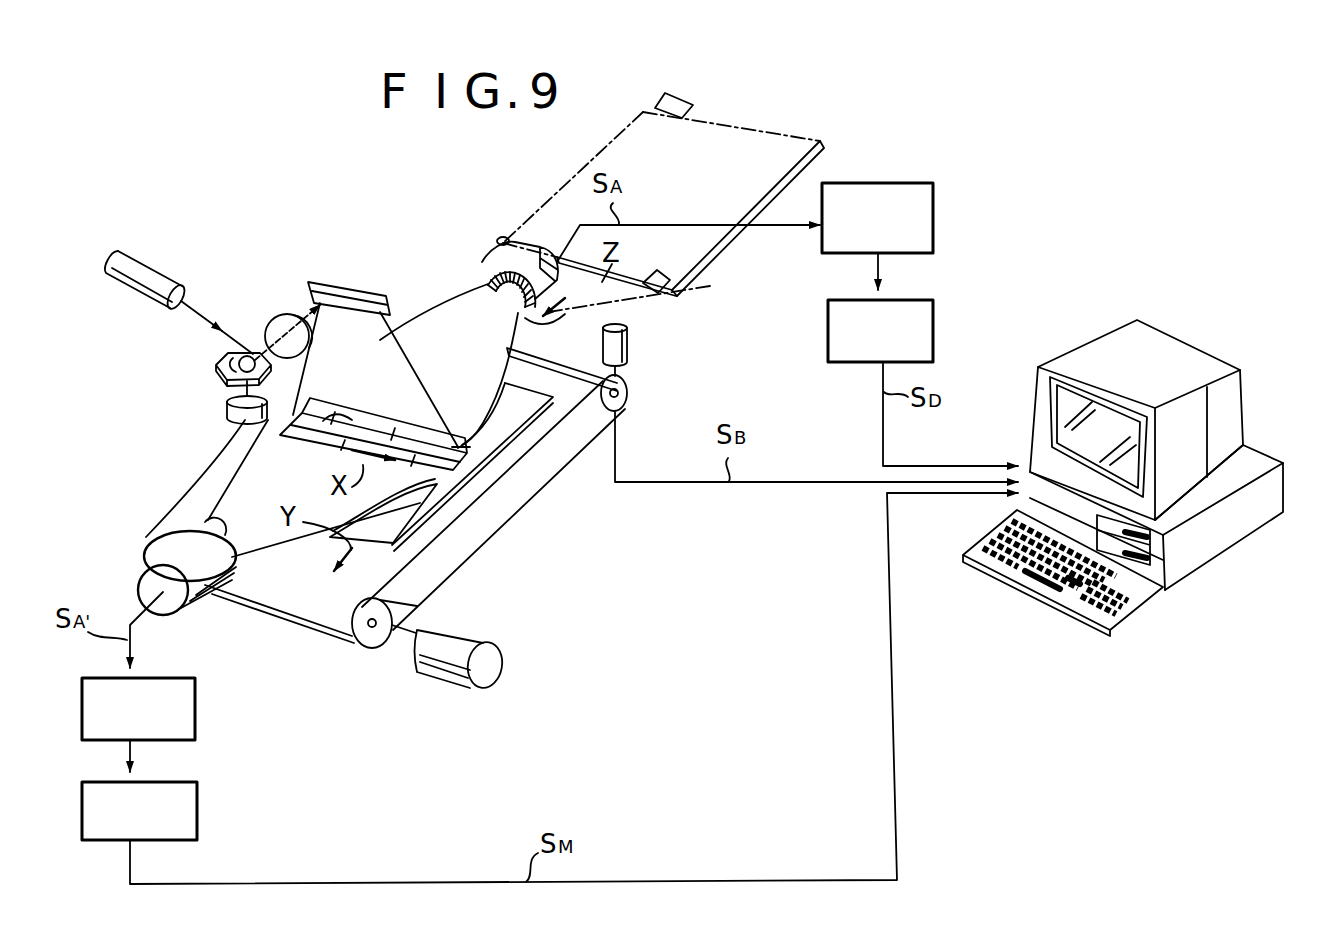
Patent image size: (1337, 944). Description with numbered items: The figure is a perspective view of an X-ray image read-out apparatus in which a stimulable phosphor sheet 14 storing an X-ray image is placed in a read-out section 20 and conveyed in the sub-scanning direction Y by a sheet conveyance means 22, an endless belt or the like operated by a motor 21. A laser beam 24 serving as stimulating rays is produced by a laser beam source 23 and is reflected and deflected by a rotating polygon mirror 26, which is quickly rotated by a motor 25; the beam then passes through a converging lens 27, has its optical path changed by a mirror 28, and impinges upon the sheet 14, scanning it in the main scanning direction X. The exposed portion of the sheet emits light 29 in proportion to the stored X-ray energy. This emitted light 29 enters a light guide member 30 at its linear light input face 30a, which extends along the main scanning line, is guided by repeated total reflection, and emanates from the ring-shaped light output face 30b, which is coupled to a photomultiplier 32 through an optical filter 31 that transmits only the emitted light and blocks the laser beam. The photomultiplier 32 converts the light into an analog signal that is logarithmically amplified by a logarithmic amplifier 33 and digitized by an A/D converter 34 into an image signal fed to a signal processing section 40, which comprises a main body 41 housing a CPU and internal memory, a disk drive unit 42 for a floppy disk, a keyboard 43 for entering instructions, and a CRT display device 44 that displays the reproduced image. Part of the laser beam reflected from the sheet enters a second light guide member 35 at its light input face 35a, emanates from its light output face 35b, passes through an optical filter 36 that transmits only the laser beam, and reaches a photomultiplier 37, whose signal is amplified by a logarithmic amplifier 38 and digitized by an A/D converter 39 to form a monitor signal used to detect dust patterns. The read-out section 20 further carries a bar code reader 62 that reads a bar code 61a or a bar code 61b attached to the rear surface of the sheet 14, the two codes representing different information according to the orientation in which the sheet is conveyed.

The stimulable phosphor sheet 14 is at (803, 134).
The read-out section 20 is at (343, 260).
The motor 21 is at (462, 640).
The sheet conveyance means 22 is at (440, 572).
The laser beam source 23 is at (146, 268).
The laser beam 24 is at (197, 313).
The motor 25 is at (228, 412).
The rotating polygon mirror 26 is at (222, 361).
The converging lens 27 is at (280, 313).
The mirror 28 is at (367, 296).
The emitted light 29 is at (357, 418).
The light guide member 30 is at (457, 327).
The light input face 30a is at (466, 450).
The light output face 30b is at (626, 306).
The optical filter 31 is at (486, 276).
The photomultiplier 32 is at (514, 253).
The logarithmic amplifier 33 is at (933, 210).
The A/D converter 34 is at (933, 325).
The light guide member 35 is at (250, 490).
The light input face 35a is at (472, 476).
The light output face 35b is at (235, 583).
The optical filter 36 is at (177, 513).
The photomultiplier 37 is at (152, 546).
The logarithmic amplifier 38 is at (197, 707).
The A/D converter 39 is at (197, 800).
The signal processing section 40 is at (1143, 464).
The main body 41 is at (1260, 453).
The disk drive unit 42 is at (1150, 525).
The keyboard 43 is at (1147, 590).
The CRT display device 44 is at (1063, 403).
The bar code 61a is at (683, 98).
The bar code 61b is at (708, 288).
The bar code reader 62 is at (632, 352).